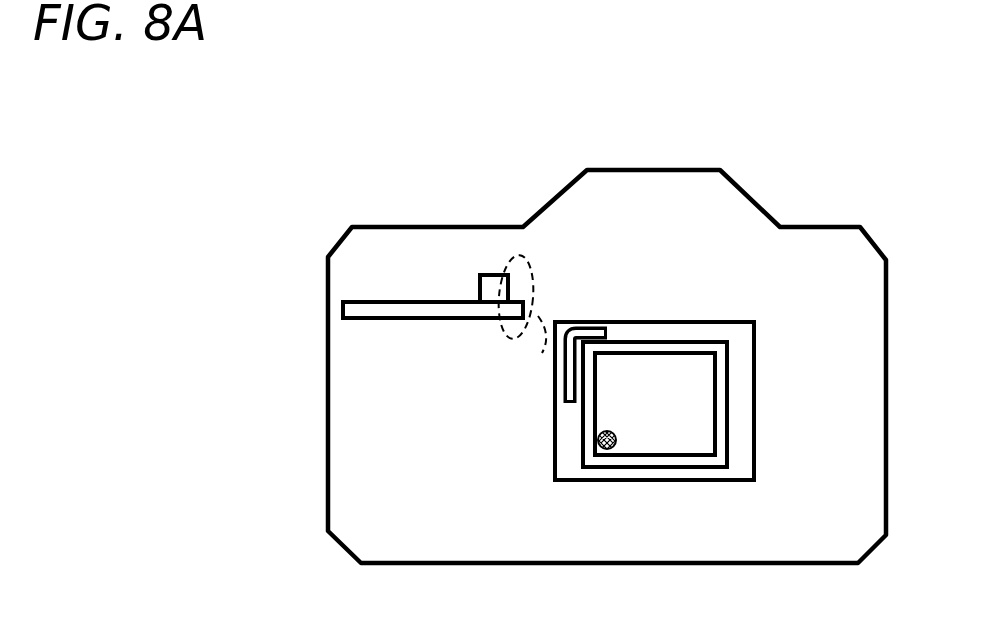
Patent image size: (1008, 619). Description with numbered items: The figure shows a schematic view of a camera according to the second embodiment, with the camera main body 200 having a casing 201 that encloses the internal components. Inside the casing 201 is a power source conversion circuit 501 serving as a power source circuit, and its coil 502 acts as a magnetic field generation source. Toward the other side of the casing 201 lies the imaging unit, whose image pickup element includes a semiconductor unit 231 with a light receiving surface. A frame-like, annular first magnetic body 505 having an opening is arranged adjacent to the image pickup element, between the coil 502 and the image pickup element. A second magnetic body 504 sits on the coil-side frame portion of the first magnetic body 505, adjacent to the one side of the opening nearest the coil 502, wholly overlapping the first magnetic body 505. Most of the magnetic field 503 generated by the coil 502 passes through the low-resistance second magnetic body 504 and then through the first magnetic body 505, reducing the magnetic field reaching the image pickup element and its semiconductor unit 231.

The camera main body 200 is at (243, 203).
The casing 201 is at (328, 508).
The power source conversion circuit 501 is at (400, 300).
The coil 502 is at (487, 273).
The magnetic field 503 is at (528, 256).
The second magnetic body 504 is at (575, 328).
The first magnetic body 505 is at (630, 327).
The semiconductor unit 231 is at (690, 353).